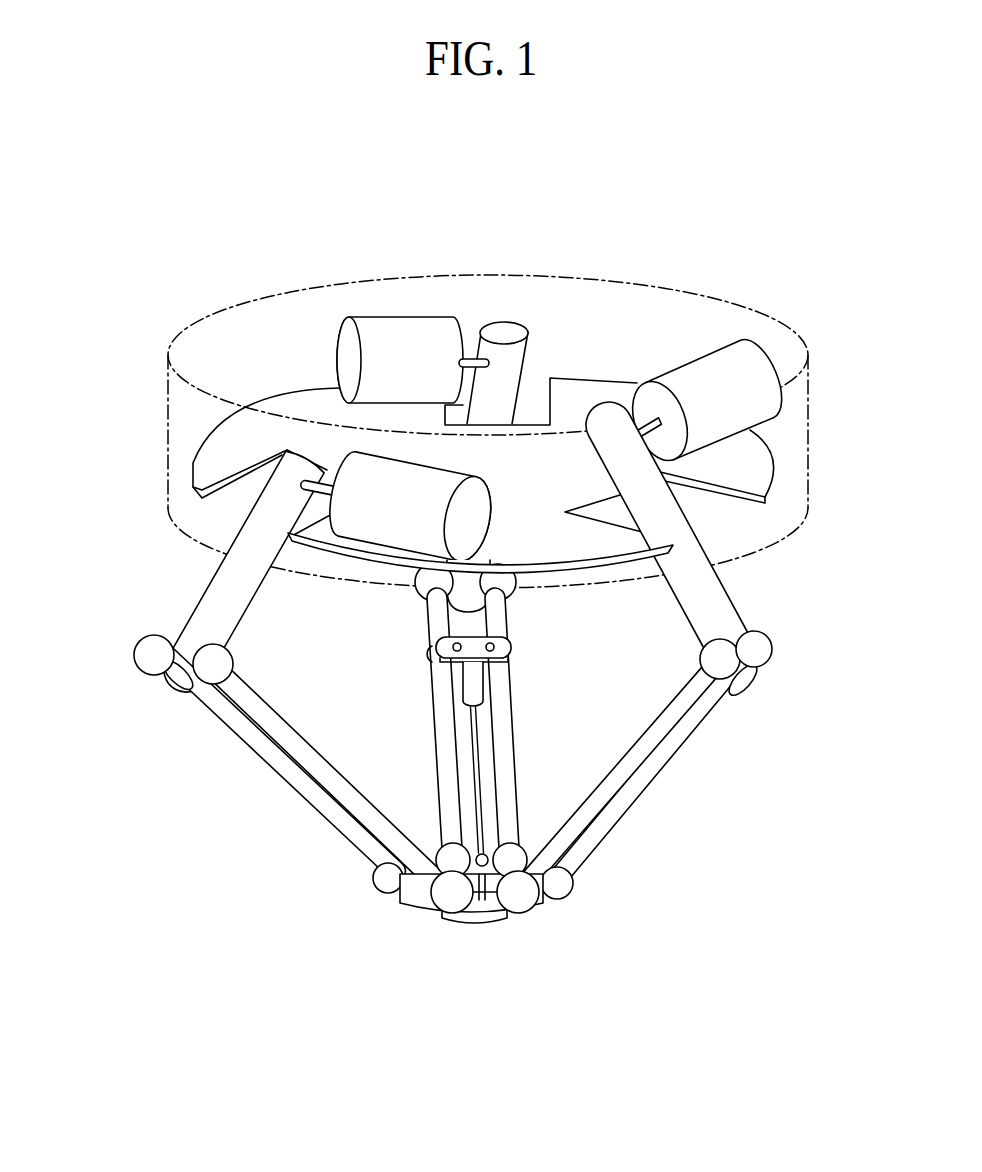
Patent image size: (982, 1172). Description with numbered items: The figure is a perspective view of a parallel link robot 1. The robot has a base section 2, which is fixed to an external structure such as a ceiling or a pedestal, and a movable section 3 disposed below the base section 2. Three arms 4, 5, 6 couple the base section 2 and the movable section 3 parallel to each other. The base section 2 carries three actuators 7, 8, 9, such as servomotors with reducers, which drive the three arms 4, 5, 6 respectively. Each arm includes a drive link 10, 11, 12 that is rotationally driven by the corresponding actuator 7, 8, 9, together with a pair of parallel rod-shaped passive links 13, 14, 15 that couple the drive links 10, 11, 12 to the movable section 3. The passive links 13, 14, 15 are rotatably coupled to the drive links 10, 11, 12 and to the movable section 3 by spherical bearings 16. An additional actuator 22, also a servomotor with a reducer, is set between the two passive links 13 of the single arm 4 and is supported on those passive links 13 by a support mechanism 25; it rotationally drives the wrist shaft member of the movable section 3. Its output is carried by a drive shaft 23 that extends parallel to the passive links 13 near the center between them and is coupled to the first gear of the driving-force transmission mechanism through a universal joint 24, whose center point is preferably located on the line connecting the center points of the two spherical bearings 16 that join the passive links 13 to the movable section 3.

The parallel link robot 1 is at (100, 228).
The base section 2 is at (153, 392).
The movable section 3 is at (557, 927).
The arm 4 is at (413, 676).
The arm 5 is at (147, 608).
The arm 6 is at (790, 612).
The actuator 7 is at (400, 330).
The actuator 8 is at (490, 490).
The actuator 9 is at (738, 355).
The drive link 10 is at (523, 358).
The drive link 11 is at (247, 530).
The drive link 12 is at (687, 550).
The passive links 13 is at (440, 692).
The passive links 14 is at (333, 780).
The passive links 15 is at (652, 727).
The spherical bearings 16 is at (148, 645).
The additional actuator 22 is at (478, 684).
The drive shaft 23 is at (479, 760).
The universal joint 24 is at (482, 908).
The support mechanism 25 is at (530, 648).